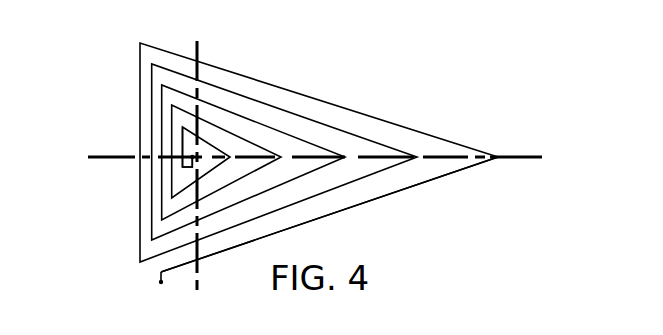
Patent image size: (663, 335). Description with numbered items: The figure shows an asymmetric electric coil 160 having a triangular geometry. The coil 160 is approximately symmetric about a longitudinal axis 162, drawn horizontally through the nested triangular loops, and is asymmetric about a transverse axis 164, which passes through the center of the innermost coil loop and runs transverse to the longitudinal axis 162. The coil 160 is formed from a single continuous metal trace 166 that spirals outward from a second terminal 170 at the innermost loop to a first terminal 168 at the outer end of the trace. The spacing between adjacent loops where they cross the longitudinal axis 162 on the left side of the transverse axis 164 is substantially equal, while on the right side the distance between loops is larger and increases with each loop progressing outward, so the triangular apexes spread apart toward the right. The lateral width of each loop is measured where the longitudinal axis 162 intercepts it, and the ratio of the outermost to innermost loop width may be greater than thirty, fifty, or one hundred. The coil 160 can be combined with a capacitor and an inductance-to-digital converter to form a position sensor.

The asymmetric electric coil 160 is at (393, 76).
The longitudinal axis 162 is at (110, 160).
The transverse axis 164 is at (199, 53).
The single continuous metal trace 166 is at (433, 180).
The first terminal 168 is at (159, 283).
The second terminal 170 is at (192, 157).